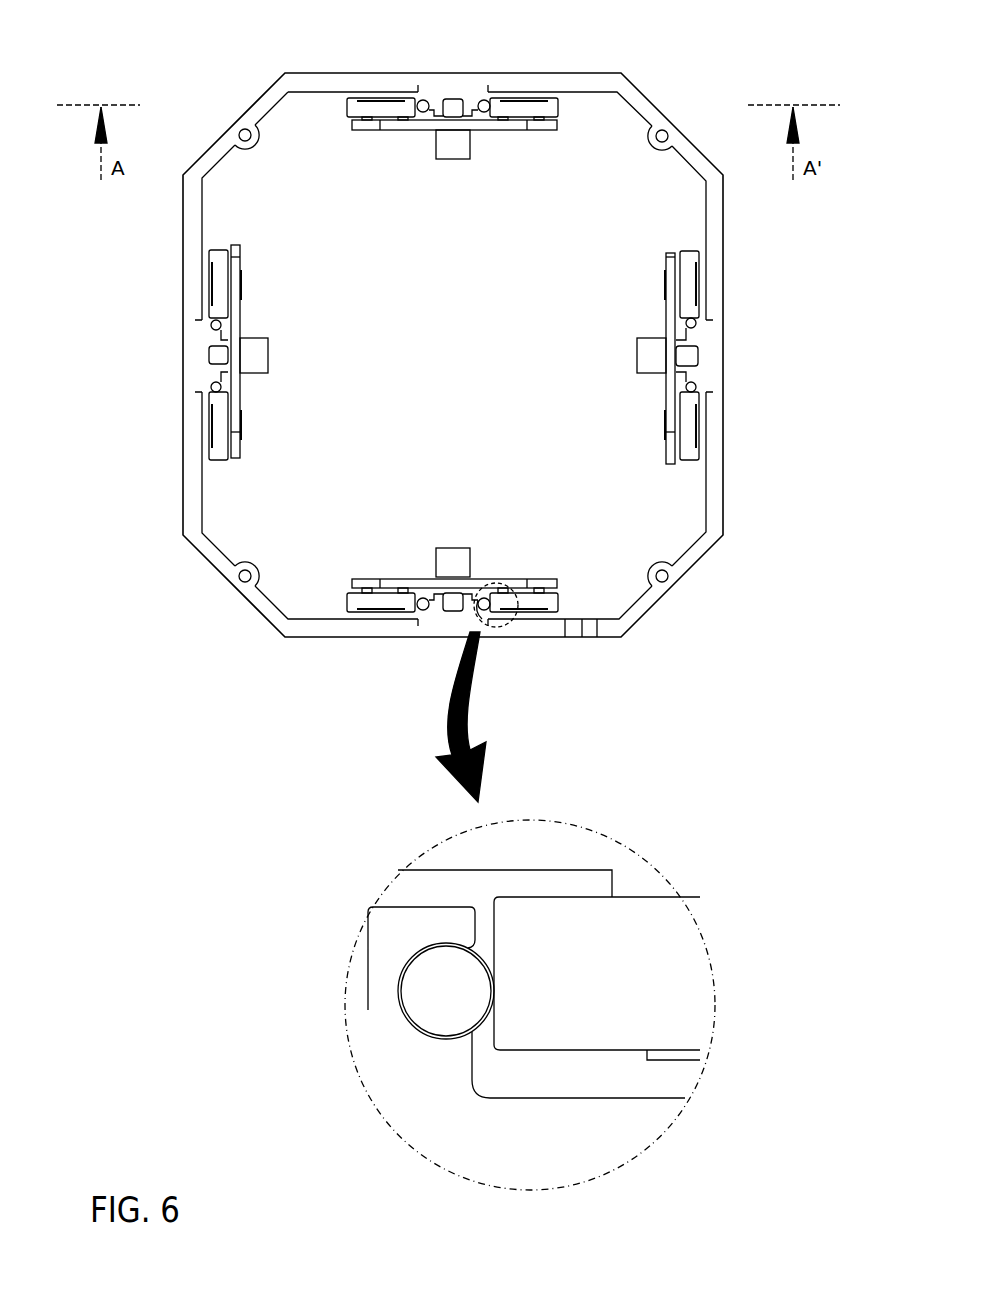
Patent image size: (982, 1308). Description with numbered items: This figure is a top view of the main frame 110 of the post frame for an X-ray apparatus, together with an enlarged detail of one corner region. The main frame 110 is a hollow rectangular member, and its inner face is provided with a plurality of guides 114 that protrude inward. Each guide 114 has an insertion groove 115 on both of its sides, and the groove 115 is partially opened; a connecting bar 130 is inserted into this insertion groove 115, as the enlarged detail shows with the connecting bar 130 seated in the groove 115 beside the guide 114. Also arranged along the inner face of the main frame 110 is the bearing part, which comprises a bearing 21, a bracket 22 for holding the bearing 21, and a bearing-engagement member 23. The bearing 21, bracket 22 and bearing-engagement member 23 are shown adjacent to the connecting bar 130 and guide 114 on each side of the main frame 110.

The main frame 110 is at (721, 584).
The guide 114 is at (478, 95).
The connecting bar 130 is at (697, 323).
The insertion groove 115 is at (697, 387).
The bearing 21 is at (699, 276).
The bracket 22 is at (670, 312).
The bearing-engagement member 23 is at (683, 354).